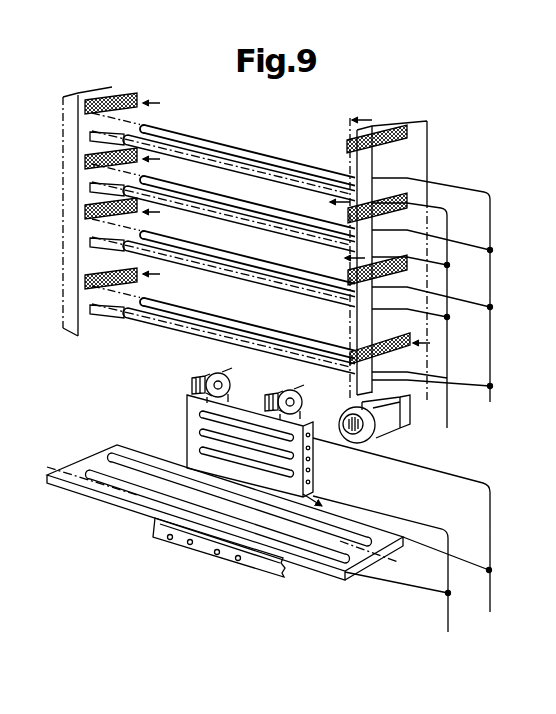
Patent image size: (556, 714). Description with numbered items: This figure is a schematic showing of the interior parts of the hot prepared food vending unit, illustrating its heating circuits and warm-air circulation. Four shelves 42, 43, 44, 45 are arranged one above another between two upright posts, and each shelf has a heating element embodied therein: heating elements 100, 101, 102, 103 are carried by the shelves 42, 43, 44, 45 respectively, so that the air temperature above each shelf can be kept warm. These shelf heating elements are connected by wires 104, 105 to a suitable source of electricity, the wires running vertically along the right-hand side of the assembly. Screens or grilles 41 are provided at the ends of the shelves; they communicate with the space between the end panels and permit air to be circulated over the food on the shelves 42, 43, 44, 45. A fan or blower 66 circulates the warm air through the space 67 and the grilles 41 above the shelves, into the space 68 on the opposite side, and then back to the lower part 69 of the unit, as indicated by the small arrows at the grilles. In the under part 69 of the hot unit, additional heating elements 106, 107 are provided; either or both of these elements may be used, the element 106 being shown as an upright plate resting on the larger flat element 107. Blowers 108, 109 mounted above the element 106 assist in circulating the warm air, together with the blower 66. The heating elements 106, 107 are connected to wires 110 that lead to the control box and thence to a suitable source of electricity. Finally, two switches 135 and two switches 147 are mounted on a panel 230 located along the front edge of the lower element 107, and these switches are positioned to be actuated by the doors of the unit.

The screens or grilles 41 is at (100, 93).
The shelf 42 is at (272, 145).
The shelf 43 is at (258, 206).
The shelf 44 is at (250, 259).
The shelf 45 is at (240, 322).
The fan or blower 66 is at (385, 440).
The space 67 is at (420, 167).
The space or passageway 68 is at (68, 240).
The lower part of the hot unit 69 is at (120, 422).
The heating element 100 is at (190, 137).
The heating element 101 is at (172, 190).
The heating element 102 is at (167, 237).
The heating element 103 is at (173, 306).
The wire 104 is at (449, 364).
The wire 105 is at (491, 346).
The heating element 106 is at (186, 419).
The heating element 107 is at (157, 498).
The blower 108 is at (187, 377).
The blower 109 is at (283, 391).
The wire 110 is at (447, 605).
The switch 135 is at (170, 540).
The switch 147 is at (190, 545).
The panel 230 is at (155, 538).